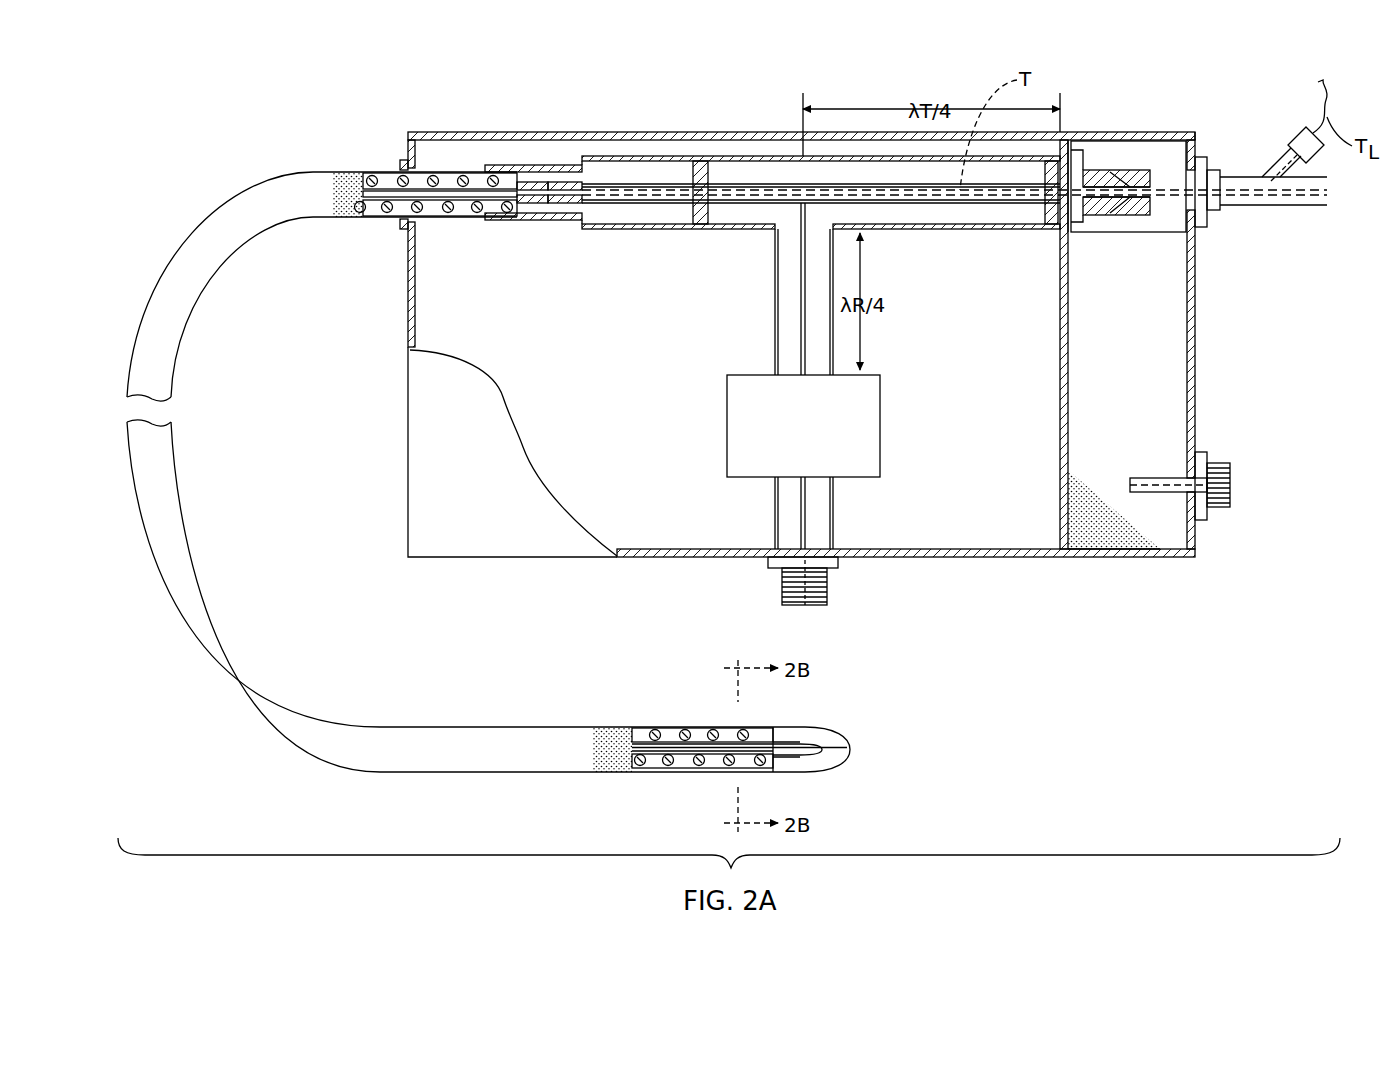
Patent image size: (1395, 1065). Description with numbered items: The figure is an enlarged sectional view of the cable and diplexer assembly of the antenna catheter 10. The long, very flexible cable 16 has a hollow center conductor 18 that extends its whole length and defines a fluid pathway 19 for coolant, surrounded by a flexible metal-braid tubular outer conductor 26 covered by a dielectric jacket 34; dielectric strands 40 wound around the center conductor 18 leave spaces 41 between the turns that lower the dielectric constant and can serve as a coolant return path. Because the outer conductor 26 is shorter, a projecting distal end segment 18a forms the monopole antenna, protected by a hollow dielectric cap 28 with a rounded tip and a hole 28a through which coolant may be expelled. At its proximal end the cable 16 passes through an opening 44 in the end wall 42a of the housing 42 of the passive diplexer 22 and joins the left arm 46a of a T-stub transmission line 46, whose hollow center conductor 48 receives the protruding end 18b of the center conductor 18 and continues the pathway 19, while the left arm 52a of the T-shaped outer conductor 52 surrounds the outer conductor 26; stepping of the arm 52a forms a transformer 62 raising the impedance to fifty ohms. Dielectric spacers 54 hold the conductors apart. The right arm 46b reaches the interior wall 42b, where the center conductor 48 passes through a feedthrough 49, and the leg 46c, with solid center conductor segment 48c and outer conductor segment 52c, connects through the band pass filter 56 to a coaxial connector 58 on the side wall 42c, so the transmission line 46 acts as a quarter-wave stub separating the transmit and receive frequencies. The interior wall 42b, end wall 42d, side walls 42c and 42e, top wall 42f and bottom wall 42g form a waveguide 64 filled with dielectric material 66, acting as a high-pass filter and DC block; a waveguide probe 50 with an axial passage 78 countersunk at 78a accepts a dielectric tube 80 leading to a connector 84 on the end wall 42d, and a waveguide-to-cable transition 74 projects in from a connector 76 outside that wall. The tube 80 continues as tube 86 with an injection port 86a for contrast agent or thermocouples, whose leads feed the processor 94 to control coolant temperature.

The antenna catheter 10 is at (195, 186).
The flexible cable 16 is at (171, 261).
The center conductor 18 is at (470, 200).
The projecting distal end segment 18a is at (800, 757).
The protruding end 18b is at (538, 204).
The fluid pathway 19 is at (960, 190).
The passive diplexer 22 is at (395, 538).
The tubular outer conductor 26 is at (437, 175).
The hollow cap 28 is at (818, 727).
The hole 28a is at (848, 751).
The jacket 34 is at (345, 205).
The dielectric strands 40 is at (372, 176).
The spaces 41 is at (725, 733).
The housing 42 is at (405, 134).
The end wall 42a is at (407, 322).
The interior wall 42b is at (1060, 380).
The side wall 42c is at (692, 558).
The end wall 42d is at (1187, 396).
The side wall 42e is at (1188, 131).
The top wall 42f is at (430, 408).
The bottom wall 42g is at (632, 557).
The opening 44 is at (404, 229).
The T-stub transmission line 46 is at (645, 306).
The left arm 46a is at (642, 243).
The right arm 46b is at (926, 244).
The leg 46c is at (758, 368).
The hollow center conductor 48 is at (565, 198).
The solid center conductor segment 48c is at (800, 296).
The feedthrough 49 is at (1075, 205).
The waveguide probe 50 is at (1080, 176).
The T-shaped outer conductor 52 is at (762, 228).
The left arm of outer conductor 52a is at (498, 166).
The outer conductor segment 52c is at (774, 322).
The dielectric spacers 54 is at (698, 205).
The band pass filter 56 is at (881, 470).
The coaxial connector 58 is at (830, 598).
The transformer 62 is at (576, 158).
The waveguide 64 is at (1057, 497).
The dielectric material 66 is at (1082, 526).
The waveguide-to-cable transition 74 is at (1142, 486).
The connector 76 is at (1226, 507).
The axial passage 78 is at (1122, 216).
The countersink 78a is at (1126, 175).
The tube 80 is at (1152, 208).
The connector 84 is at (1208, 228).
The tube 86 is at (1258, 206).
The injection port 86a is at (1304, 134).
The processor 94 is at (1383, 101).